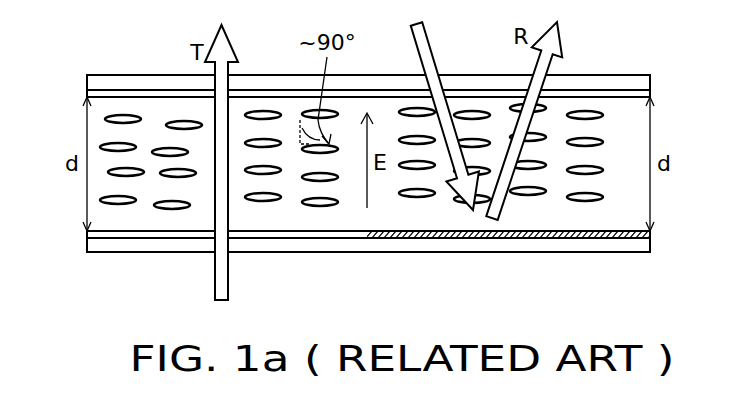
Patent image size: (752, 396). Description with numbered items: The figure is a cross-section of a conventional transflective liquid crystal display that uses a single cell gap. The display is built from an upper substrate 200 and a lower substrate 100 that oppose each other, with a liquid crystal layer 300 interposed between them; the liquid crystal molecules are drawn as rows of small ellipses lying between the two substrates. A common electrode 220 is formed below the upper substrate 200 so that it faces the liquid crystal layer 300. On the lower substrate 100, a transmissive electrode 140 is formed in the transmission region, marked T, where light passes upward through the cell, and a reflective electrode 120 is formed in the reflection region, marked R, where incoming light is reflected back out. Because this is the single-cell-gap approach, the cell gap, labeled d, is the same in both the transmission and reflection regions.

The lower substrate 100 is at (636, 253).
The reflective electrode 120 is at (650, 235).
The transmissive electrode 140 is at (87, 236).
The upper substrate 200 is at (640, 82).
The common electrode 220 is at (650, 93).
The liquid crystal layer 300 is at (619, 140).